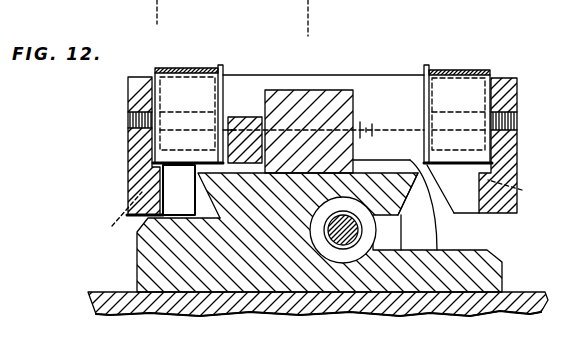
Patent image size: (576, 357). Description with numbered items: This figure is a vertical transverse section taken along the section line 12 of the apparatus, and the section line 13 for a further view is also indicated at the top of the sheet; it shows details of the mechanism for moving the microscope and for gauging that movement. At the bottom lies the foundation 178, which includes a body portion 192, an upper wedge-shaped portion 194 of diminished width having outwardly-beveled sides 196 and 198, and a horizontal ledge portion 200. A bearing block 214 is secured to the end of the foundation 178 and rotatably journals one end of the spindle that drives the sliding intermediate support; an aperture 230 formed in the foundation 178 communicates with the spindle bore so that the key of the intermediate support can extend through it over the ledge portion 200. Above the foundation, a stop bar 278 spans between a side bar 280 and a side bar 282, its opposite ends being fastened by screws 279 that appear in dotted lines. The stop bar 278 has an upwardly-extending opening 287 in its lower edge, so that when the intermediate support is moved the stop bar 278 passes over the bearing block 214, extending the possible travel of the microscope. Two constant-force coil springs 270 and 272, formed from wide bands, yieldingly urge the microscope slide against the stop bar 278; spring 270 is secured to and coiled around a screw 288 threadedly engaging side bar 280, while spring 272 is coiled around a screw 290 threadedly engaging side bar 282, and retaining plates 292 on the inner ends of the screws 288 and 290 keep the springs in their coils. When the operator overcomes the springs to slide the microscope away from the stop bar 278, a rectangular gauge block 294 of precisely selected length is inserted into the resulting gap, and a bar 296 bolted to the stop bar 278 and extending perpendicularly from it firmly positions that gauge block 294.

The section line 12 is at (290, 5).
The section line 13- 13 is at (176, 5).
The foundation 178 is at (288, 232).
The body portion 192 is at (287, 249).
The upper wedge-shaped portion 194 is at (307, 204).
The outwardly-beveled side 196 is at (406, 197).
The outwardly-beveled side 198 is at (203, 183).
The horizontal ledge portion 200 is at (468, 280).
The bearing block 214 is at (435, 224).
The aperture 230 is at (385, 237).
The coil spring 270 is at (183, 68).
The coil spring 272 is at (446, 70).
The stop bar 278 is at (467, 213).
The screws 279 is at (319, 207).
The side bar 280 is at (154, 146).
The side bar 282 is at (409, 106).
The upwardly-extending opening 287 is at (257, 175).
The screw 288 is at (128, 118).
The screw 290 is at (514, 121).
The retaining plates 292 is at (223, 92).
The gauge block 294 is at (320, 90).
The bar 296 is at (230, 130).